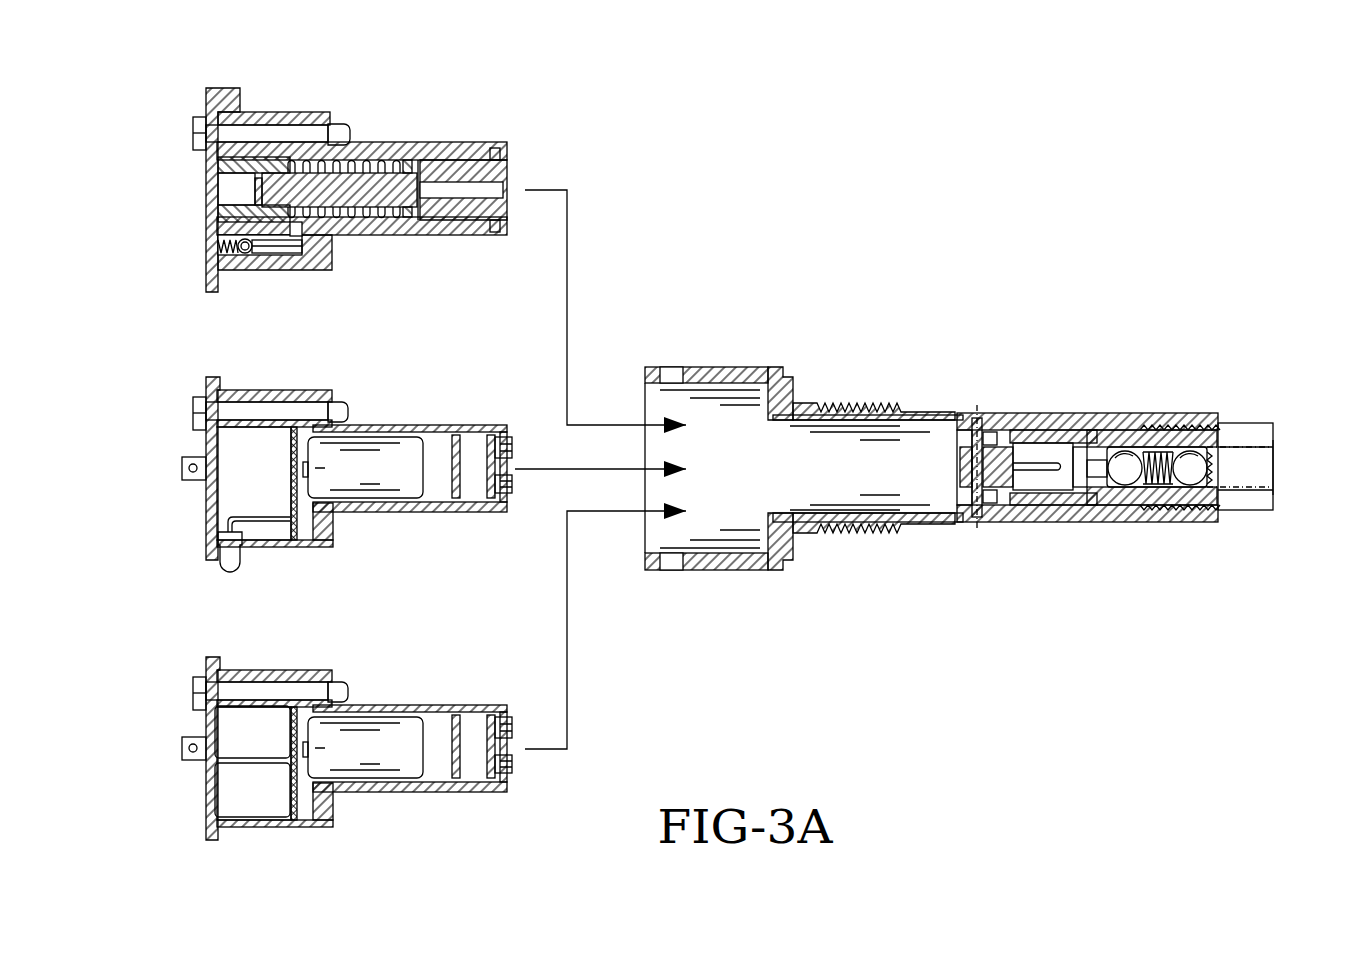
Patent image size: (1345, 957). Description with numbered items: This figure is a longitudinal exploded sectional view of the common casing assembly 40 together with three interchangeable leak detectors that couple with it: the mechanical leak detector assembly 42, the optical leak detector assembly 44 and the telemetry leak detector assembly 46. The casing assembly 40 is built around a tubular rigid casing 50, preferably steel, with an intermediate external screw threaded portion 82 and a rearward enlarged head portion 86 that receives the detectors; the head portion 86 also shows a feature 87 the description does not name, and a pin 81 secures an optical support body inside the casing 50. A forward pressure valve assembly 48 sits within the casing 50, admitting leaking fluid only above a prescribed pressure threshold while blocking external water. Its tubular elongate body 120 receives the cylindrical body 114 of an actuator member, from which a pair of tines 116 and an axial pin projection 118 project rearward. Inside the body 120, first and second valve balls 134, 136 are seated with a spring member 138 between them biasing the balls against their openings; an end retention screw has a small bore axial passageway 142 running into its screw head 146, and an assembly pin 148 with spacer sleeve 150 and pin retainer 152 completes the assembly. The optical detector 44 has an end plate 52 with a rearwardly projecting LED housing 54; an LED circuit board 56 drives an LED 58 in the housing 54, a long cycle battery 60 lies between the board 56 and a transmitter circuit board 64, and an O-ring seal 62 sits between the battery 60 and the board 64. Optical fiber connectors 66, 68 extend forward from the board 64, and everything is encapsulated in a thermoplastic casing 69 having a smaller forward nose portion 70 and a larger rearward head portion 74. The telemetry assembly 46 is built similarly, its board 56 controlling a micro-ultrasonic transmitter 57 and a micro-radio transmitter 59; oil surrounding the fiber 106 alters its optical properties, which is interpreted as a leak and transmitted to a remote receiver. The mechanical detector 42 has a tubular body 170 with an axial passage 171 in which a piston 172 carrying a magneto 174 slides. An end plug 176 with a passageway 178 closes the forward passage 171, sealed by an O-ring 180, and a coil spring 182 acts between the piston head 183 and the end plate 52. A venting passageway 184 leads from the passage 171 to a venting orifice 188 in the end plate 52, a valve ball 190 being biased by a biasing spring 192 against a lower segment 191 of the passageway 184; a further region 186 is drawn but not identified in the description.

The casing assembly 40 is at (985, 343).
The mechanical leak detector assembly 42 is at (497, 130).
The optical leak detector assembly 44 is at (497, 410).
The telemetry leak detector assembly 46 is at (497, 690).
The forward pressure valve assembly 48 is at (1141, 510).
The tubular rigid casing 50 is at (913, 528).
The end plate 52 is at (206, 96).
The LED housing 54 is at (192, 458).
The LED circuit board 56 is at (296, 502).
The micro-ultrasonic transmitter 57 is at (223, 725).
The LED 58 is at (227, 565).
The micro-radio transmitter 59 is at (223, 773).
The long cycle battery 60 is at (392, 477).
The O-ring seal 62 is at (458, 487).
The transmitter circuit board 64 is at (483, 440).
The optical fiber connector 66 is at (510, 448).
The optical fiber connector 68 is at (512, 488).
The casing 69 is at (385, 237).
The forward nose portion 70 is at (447, 425).
The rearward head portion 74 is at (260, 390).
The pin 81 is at (967, 450).
The external screw threaded portion 82 is at (852, 405).
The rearward enlarged head portion 86 is at (738, 377).
The recess 87 is at (672, 377).
The fiber 106 is at (1040, 478).
The cylindrical body 114 is at (1042, 490).
The tines 116 is at (964, 455).
The pin projection 118 is at (1097, 465).
The tubular elongate body 120 is at (1231, 520).
The first valve ball 134 is at (1125, 468).
The second valve ball 136 is at (1190, 468).
The spring member 138 is at (1160, 462).
The small bore axial passageway 142 is at (1275, 462).
The screw head 146 is at (1262, 440).
The assembly pin 148 is at (272, 132).
The spacer sleeve 150 is at (242, 390).
The pin retainer 152 is at (341, 130).
The tubular body 170 is at (442, 155).
The axial passage 171 is at (222, 195).
The piston 172 is at (377, 188).
The magneto 174 is at (255, 187).
The end plug 176 is at (467, 213).
The passageway 178 is at (508, 184).
The sealing O-ring 180 is at (407, 160).
The coil spring 182 is at (362, 215).
The piston head 183 is at (408, 190).
The venting passageway 184 is at (297, 232).
The detent housing 186 is at (227, 263).
The venting orifice 188 is at (245, 245).
The valve ball 190 is at (213, 242).
The lower segment 191 is at (253, 253).
The biasing spring 192 is at (228, 255).